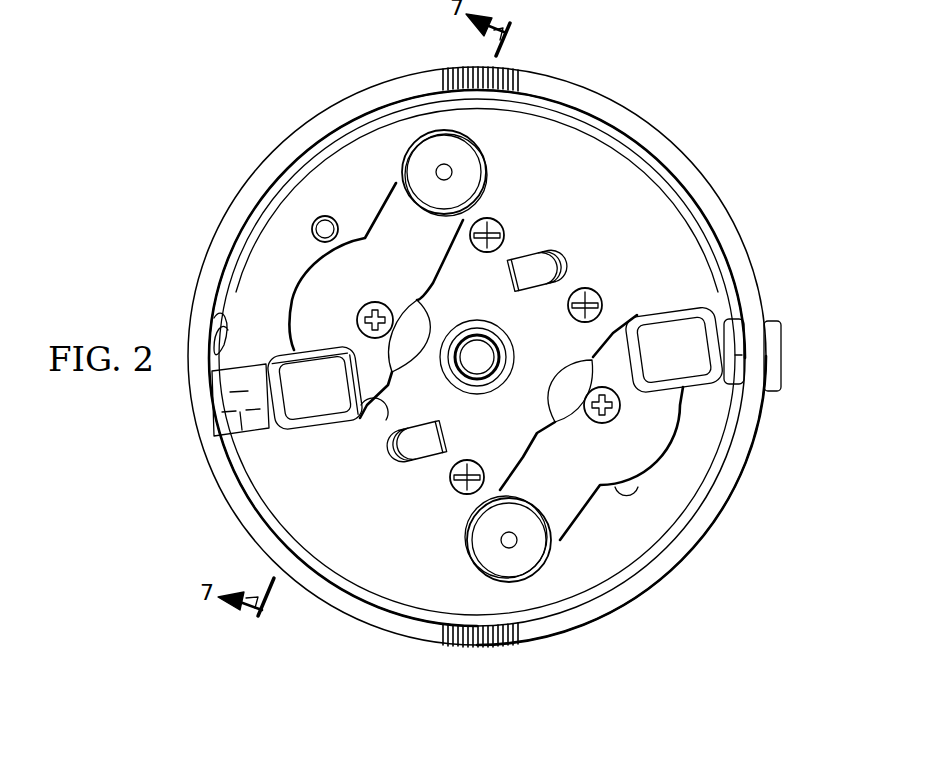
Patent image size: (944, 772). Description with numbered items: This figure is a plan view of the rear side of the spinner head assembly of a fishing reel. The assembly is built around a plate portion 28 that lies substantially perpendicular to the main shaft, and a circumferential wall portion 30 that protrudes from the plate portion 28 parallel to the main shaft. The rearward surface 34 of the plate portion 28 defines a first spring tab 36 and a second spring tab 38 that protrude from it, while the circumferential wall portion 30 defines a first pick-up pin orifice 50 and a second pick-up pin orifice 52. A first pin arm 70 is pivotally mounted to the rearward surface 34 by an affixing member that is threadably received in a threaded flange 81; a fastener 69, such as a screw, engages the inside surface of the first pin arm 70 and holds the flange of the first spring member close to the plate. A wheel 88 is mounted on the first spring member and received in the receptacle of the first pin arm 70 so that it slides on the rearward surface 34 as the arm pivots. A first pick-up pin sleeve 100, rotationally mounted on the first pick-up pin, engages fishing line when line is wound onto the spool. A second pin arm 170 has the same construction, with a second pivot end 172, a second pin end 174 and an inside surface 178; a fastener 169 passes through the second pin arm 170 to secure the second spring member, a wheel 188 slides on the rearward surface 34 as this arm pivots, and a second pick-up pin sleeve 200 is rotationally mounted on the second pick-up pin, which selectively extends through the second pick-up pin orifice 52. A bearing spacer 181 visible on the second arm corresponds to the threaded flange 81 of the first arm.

The plate portion 28 is at (656, 196).
The circumferential wall portion 30 is at (645, 598).
The rearward surface 34 is at (690, 234).
The second pick-up pin orifice 52 is at (733, 270).
The first pick-up pin orifice 50 is at (218, 322).
The first pick-up pin sleeve 100 is at (773, 322).
The second pick-up pin sleeve 200 is at (244, 422).
The first pin arm 70 is at (325, 274).
The fastener 69 is at (375, 302).
The threaded flange 81 is at (495, 160).
The wheel 88 is at (406, 362).
The first spring tab 36 is at (546, 252).
The second spring tab 38 is at (408, 464).
The wheel 188 is at (570, 368).
The fastener 169 is at (560, 428).
The inside surface 178 is at (645, 462).
The second pin arm 170 is at (672, 445).
The second pin end 174 is at (724, 400).
The second pulley 181 is at (467, 538).
The second pivot end 172 is at (472, 590).